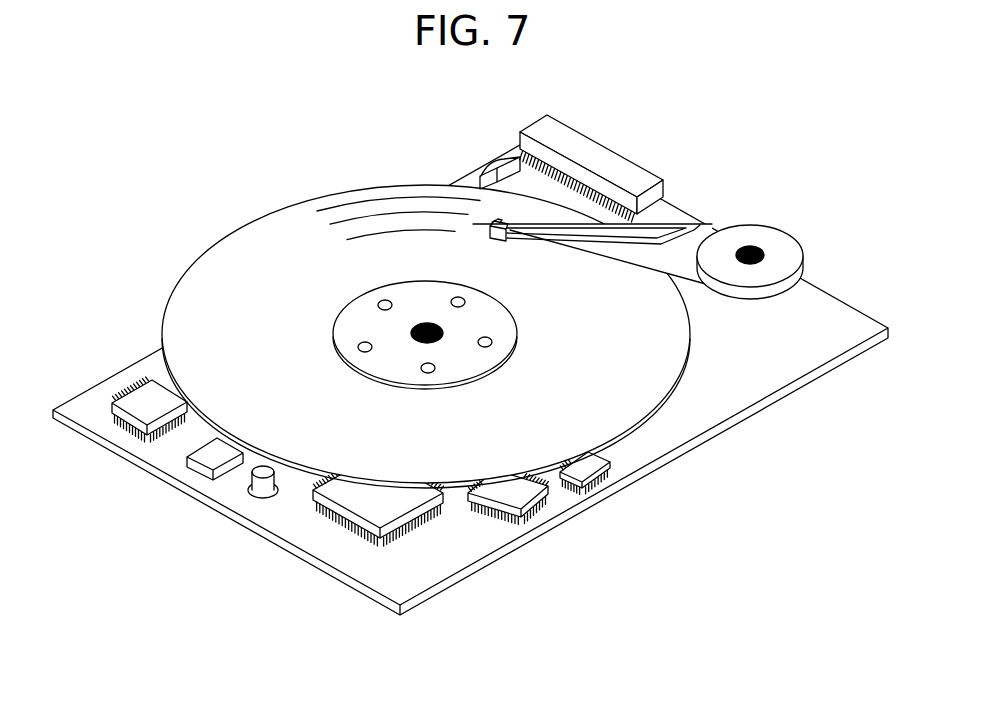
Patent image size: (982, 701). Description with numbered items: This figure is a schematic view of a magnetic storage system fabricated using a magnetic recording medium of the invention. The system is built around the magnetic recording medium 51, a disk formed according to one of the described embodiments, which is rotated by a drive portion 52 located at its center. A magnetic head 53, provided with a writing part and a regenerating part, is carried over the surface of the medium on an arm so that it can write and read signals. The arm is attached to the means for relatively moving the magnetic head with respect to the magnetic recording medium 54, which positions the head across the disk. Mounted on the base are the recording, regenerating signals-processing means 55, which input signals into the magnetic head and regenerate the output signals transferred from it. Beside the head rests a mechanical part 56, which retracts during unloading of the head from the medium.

The magnetic recording medium 51 is at (187, 330).
The drive portion 52 is at (352, 318).
The magnetic head 53 is at (498, 222).
The means for relatively moving the magnetic head 54 is at (752, 238).
The recording, regenerating signals-processing means 55 is at (387, 512).
The mechanical part 56 is at (497, 168).